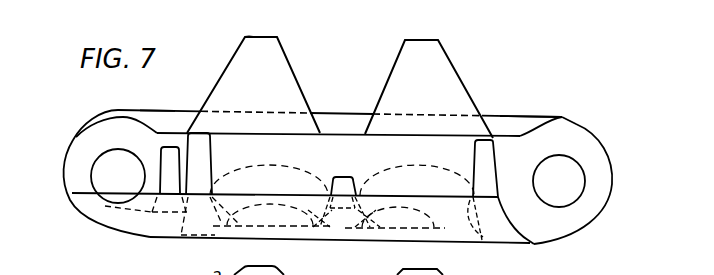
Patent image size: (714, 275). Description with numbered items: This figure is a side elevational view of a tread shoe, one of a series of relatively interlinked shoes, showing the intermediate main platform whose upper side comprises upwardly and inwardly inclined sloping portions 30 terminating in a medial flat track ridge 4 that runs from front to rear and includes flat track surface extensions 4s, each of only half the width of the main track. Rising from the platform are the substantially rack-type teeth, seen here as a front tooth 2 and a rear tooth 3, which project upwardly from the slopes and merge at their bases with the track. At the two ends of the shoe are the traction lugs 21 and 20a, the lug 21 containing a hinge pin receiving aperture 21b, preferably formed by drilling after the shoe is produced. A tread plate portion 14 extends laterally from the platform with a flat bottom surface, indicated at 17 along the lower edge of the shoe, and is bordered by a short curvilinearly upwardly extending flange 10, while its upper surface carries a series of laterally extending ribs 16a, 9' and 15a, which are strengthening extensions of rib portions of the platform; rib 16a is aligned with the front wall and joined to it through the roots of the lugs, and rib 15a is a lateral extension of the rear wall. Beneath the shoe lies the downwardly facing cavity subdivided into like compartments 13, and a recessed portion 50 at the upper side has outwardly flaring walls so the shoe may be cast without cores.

The front companion pair of rack-type teeth 2 is at (427, 40).
The rear companion pair of rack-type teeth 3 is at (264, 37).
The medial flat track ridge 4 is at (349, 113).
The flat track surface extensions 4s is at (163, 111).
The laterally extending rib 9' is at (344, 190).
The curvilinearly upwardly extending flanges 10 is at (280, 191).
The cavity compartments 13 is at (410, 170).
The tread plate portions 14 is at (493, 235).
The laterally extending rib 15a is at (161, 156).
The laterally extending rib 16a is at (490, 158).
The bottom edge of link 17 is at (353, 241).
The traction lug 20a is at (68, 147).
The traction lug 21 is at (603, 151).
The hinge pin receiving aperture 21b is at (585, 180).
The inclined sloping portions 30 is at (269, 169).
The recessed portion 50 is at (124, 186).